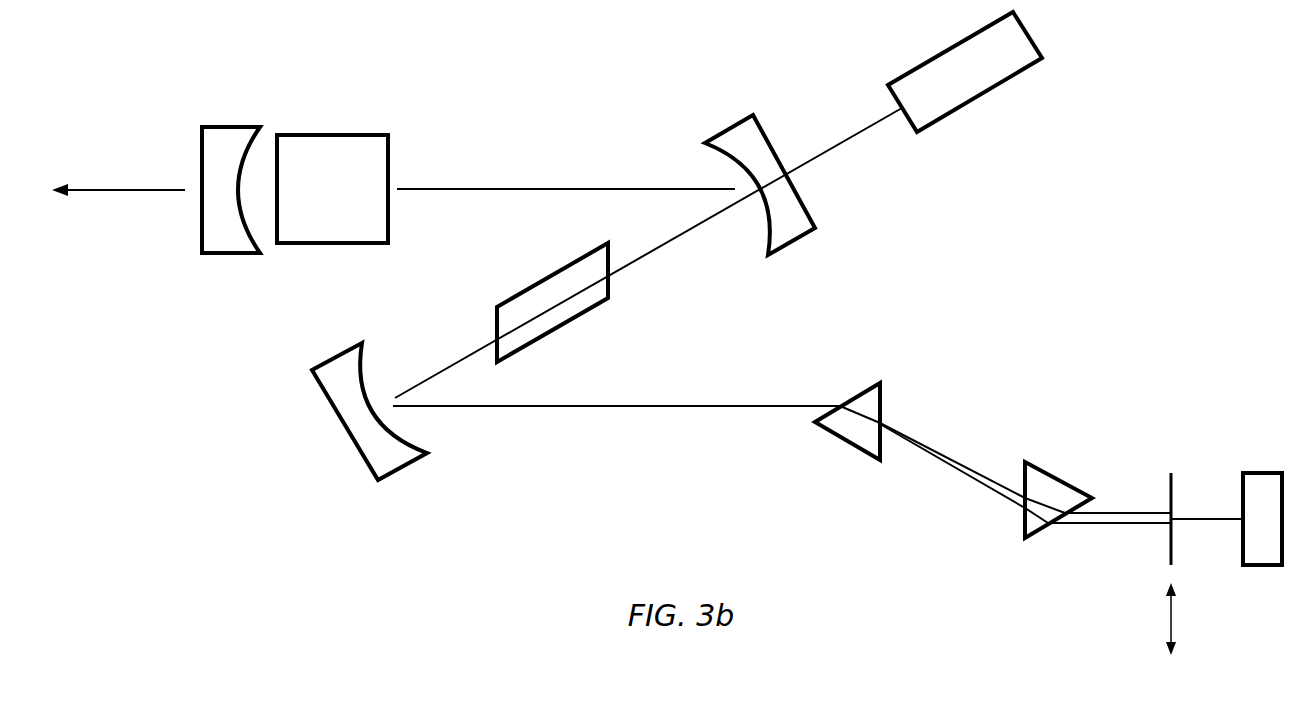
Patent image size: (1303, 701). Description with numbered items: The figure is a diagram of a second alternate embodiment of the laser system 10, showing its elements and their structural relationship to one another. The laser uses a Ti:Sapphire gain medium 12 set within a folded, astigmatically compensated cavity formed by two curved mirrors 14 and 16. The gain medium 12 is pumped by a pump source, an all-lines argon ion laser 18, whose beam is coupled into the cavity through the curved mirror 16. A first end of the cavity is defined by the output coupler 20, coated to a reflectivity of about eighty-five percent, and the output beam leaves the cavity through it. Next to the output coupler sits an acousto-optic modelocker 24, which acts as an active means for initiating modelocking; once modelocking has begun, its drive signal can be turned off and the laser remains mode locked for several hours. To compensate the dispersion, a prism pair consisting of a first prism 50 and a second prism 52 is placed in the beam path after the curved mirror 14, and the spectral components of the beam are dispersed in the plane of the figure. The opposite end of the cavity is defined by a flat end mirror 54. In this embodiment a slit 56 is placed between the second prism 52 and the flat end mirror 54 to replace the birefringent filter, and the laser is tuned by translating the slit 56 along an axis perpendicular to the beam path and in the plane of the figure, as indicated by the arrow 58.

The laser system 10 is at (526, 497).
The Ti:Sapphire gain medium 12 is at (609, 293).
The curved mirror 14 is at (313, 381).
The curved mirror 16 is at (812, 210).
The argon ion laser 18 is at (1042, 58).
The output coupler 20 is at (202, 228).
The acousto-optic modelocker 24 is at (388, 140).
The first prism 50 is at (858, 450).
The second prism 52 is at (1057, 478).
The flat end mirror 54 is at (1268, 566).
The slit 56 is at (1172, 478).
The arrow 58 is at (1172, 622).